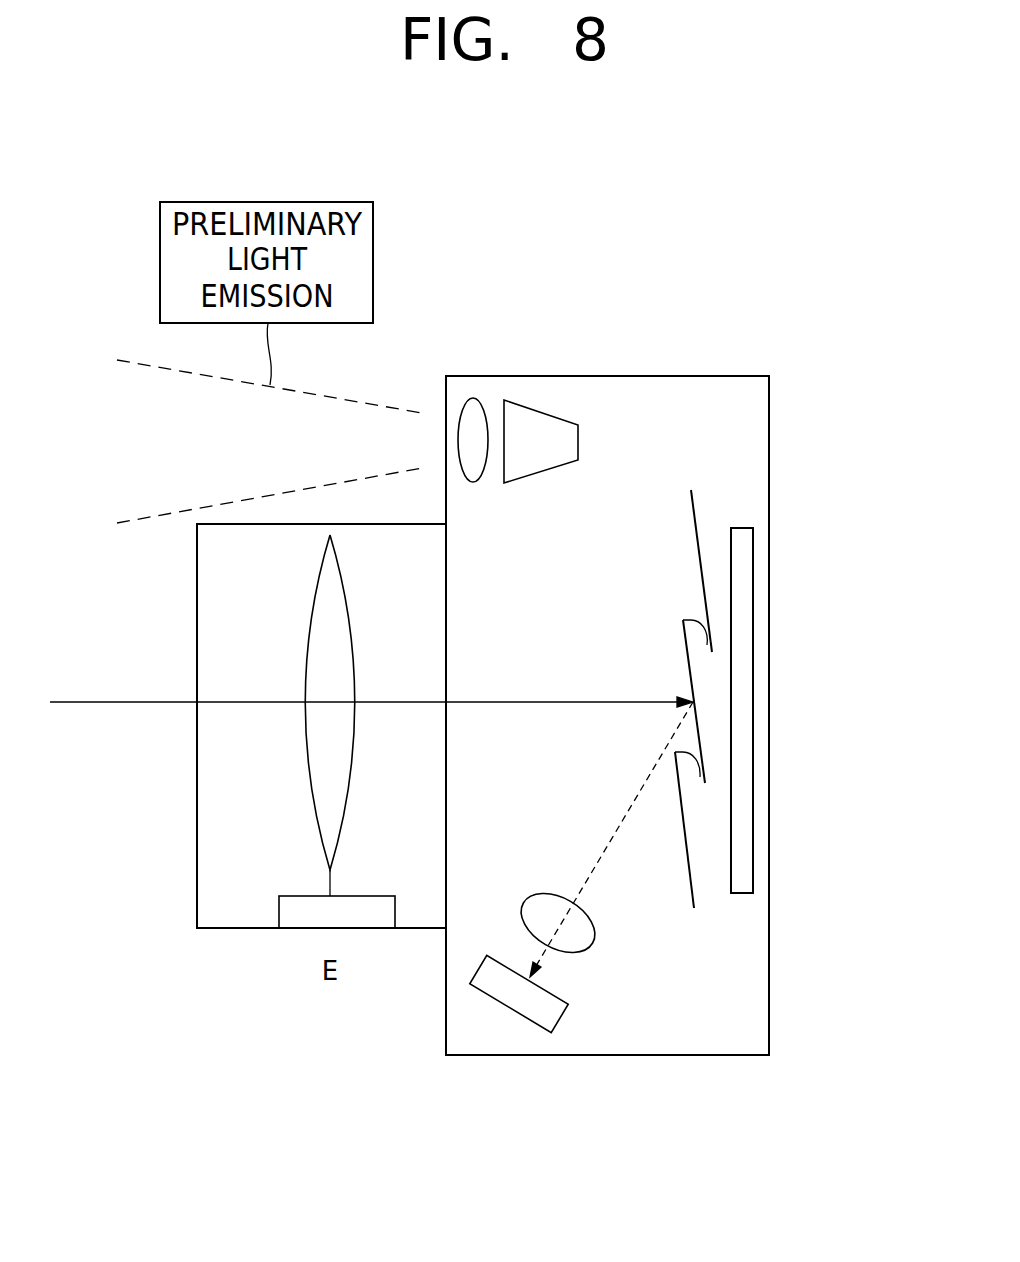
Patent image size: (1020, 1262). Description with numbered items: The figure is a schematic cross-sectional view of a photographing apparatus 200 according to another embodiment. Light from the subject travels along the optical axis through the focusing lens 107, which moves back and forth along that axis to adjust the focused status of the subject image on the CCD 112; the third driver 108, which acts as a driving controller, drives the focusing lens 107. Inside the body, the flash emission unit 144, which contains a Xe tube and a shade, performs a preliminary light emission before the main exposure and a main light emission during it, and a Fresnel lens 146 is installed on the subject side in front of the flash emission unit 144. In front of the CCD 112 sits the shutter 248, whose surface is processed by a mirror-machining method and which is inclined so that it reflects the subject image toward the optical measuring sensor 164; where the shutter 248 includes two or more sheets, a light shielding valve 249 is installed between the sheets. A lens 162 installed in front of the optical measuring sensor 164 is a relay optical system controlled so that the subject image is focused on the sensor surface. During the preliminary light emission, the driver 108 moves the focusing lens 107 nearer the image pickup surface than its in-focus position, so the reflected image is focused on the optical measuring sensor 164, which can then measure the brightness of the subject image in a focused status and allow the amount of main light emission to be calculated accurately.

The photographing apparatus 200 is at (629, 298).
The Fresnel lens 146 is at (474, 400).
The flash emission unit 144 is at (542, 410).
The shutter 248 is at (695, 512).
The light shielding valve 249 is at (691, 618).
The CCD 112 is at (753, 728).
The focusing lens 107 is at (309, 790).
The third driver 108 is at (279, 904).
The lens 162 is at (595, 947).
The optical measuring sensor 164 is at (520, 1015).